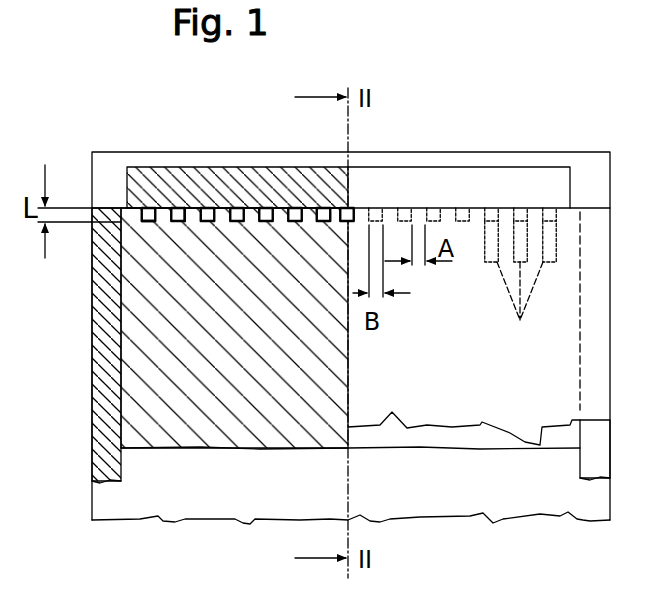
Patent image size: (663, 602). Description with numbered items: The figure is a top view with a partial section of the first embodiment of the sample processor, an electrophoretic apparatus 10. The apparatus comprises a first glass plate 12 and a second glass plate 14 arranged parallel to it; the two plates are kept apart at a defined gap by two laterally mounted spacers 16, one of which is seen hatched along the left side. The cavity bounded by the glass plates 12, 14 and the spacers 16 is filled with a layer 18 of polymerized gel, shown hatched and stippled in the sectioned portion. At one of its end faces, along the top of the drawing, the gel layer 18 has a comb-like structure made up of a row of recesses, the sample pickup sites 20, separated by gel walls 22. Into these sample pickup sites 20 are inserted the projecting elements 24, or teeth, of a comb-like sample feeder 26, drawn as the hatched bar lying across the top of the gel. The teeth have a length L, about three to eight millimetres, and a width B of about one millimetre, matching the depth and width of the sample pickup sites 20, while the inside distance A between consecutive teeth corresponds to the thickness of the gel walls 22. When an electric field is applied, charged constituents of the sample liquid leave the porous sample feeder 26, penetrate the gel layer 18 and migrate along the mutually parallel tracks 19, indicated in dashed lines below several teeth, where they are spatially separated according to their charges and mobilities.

The electrophoretic apparatus 10 is at (494, 137).
The first glass plate 12 is at (415, 485).
The second glass plate 14 is at (455, 385).
The spacers 16 is at (97, 457).
The gel layer 18 is at (167, 428).
The tracks 19 is at (520, 320).
The sample pickup sites 20 is at (153, 222).
The gel walls 22 is at (194, 222).
The projecting elements 24 is at (180, 218).
The sample feeder 26 is at (410, 185).